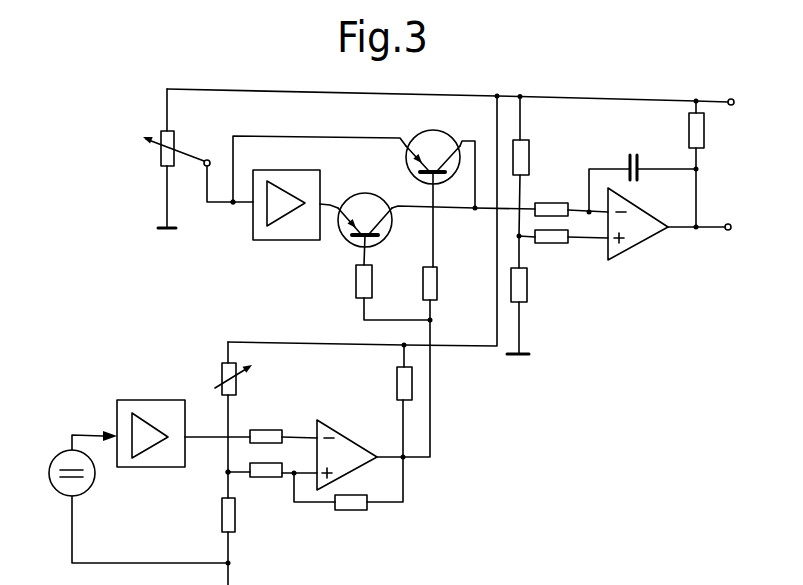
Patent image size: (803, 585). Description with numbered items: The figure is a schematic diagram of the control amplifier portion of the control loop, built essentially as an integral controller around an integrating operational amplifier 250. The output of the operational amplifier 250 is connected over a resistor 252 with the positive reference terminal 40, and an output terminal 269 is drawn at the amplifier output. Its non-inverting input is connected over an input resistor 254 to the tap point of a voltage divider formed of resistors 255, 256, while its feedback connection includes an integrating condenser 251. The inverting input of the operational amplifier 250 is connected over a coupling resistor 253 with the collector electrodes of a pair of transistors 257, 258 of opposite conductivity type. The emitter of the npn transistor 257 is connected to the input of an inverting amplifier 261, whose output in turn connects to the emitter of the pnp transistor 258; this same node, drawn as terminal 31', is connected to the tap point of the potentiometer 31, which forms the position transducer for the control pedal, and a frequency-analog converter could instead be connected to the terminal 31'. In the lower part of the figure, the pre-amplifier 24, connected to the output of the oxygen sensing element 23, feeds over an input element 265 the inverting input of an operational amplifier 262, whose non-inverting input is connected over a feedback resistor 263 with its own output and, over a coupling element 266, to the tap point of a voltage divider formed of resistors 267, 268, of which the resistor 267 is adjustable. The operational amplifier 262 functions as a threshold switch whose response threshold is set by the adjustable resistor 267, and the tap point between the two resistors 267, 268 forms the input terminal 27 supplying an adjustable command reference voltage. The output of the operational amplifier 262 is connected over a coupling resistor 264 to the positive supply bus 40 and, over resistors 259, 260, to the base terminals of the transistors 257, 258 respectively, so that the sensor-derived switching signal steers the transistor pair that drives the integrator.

The oxygen sensor 23 is at (94, 481).
The pre-amplifier 24 is at (165, 467).
The input terminal 27 is at (225, 474).
The potentiometer 31 is at (163, 151).
The terminal 31' is at (227, 219).
The positive reference terminal 40 is at (720, 96).
The integrating operational amplifier 250 is at (641, 242).
The integrating condenser 251 is at (632, 152).
The resistor 252 is at (705, 130).
The coupling resistor 253 is at (553, 202).
The input resistor 254 is at (558, 243).
The voltage divider resistor 255 is at (530, 149).
The voltage divider resistor 256 is at (528, 283).
The npn transistor 257 is at (433, 131).
The pnp transistor 258 is at (367, 202).
The resistor 259 is at (438, 287).
The resistor 260 is at (373, 286).
The inverting amplifier 261 is at (288, 170).
The operational amplifier 262 is at (342, 428).
The feedback resistor 263 is at (353, 510).
The coupling resistor 264 is at (397, 385).
The input resistor 265 is at (266, 430).
The resistor 266 is at (268, 477).
The adjustable resistor 267 is at (238, 383).
The resistor 268 is at (236, 514).
The output terminal 269 is at (730, 245).